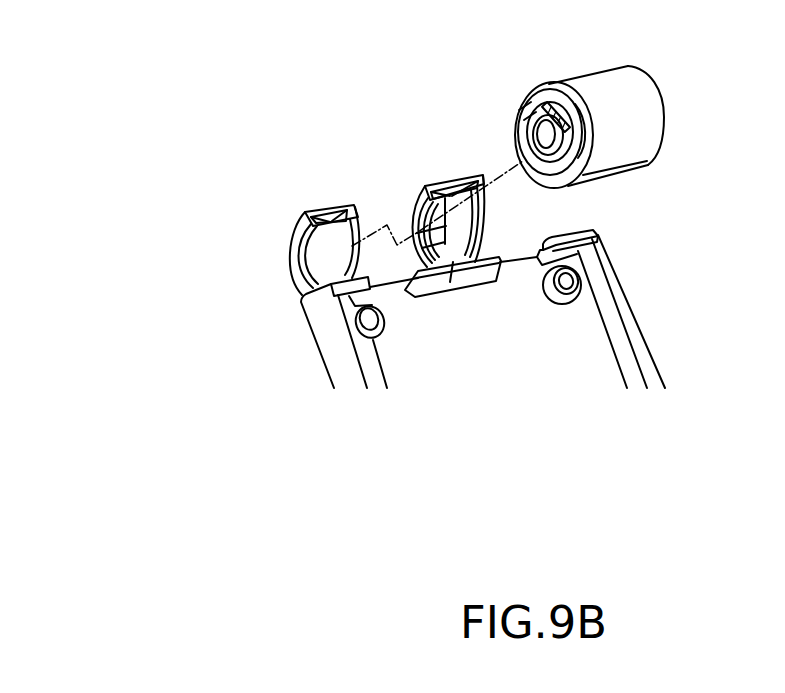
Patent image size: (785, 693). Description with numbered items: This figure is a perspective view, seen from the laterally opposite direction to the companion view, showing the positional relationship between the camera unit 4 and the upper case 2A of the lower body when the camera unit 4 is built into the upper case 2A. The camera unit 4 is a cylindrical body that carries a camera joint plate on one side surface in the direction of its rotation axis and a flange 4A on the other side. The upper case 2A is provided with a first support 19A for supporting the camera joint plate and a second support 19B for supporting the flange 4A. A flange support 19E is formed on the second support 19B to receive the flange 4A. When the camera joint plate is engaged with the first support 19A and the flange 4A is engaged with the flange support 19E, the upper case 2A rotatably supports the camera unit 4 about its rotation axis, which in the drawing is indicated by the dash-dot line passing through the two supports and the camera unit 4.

The camera unit 4 is at (642, 89).
The flange 4A is at (550, 83).
The first support 19A is at (440, 188).
The second support 19B is at (261, 211).
The flange support 19E is at (331, 222).
The upper case 2A is at (378, 368).